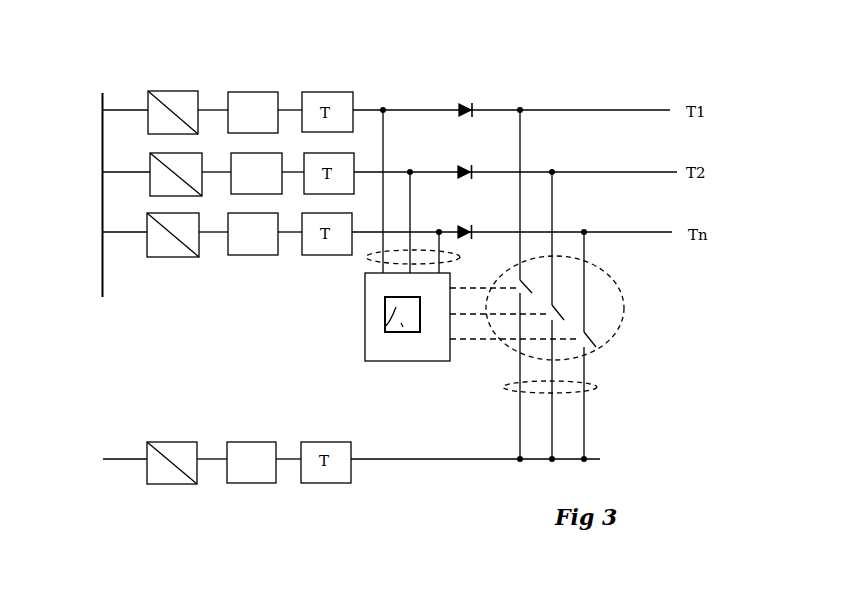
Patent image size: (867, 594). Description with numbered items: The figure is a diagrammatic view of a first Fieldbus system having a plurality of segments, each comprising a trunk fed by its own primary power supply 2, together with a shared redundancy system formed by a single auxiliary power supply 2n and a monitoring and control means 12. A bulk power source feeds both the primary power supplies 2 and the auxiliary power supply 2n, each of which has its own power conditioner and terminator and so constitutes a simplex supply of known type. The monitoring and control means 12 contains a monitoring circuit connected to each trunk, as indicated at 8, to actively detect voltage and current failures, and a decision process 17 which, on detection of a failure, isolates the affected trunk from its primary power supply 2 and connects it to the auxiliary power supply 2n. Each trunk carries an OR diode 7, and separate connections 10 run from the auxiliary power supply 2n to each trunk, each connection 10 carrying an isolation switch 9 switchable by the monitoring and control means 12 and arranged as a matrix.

The primary power supply 2 is at (174, 95).
The auxiliary power supply 2n is at (164, 479).
The OR diode 7 is at (466, 104).
The monitoring circuit connections 8 is at (368, 257).
The isolation switch 9 is at (625, 305).
The connection 10 is at (593, 388).
The monitoring and control means 12 is at (407, 347).
The decision process 17 is at (386, 328).